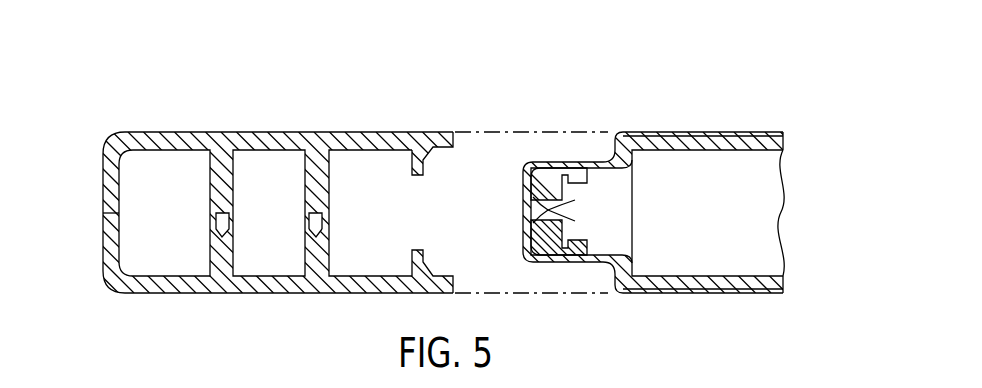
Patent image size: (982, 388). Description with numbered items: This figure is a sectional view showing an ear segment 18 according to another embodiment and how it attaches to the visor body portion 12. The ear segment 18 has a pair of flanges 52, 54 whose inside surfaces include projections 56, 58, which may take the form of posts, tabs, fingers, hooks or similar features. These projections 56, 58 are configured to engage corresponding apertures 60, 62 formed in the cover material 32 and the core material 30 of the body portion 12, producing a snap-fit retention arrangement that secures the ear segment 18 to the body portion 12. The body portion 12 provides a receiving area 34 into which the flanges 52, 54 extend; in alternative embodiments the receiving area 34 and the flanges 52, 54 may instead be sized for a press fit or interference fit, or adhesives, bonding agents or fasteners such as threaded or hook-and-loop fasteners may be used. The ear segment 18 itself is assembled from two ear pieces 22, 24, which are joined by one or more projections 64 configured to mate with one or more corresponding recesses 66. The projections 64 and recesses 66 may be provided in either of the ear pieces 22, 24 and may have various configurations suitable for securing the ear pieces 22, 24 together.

The visor body portion 12 is at (730, 68).
The ear segment 18 is at (190, 112).
The ear piece 22 is at (123, 150).
The ear piece 24 is at (126, 278).
The core material 30 is at (781, 140).
The cover material 32 is at (752, 131).
The receiving area 34 is at (595, 105).
The flange 52 is at (338, 129).
The flange 54 is at (332, 288).
The projection 56 is at (414, 157).
The projection 58 is at (424, 265).
The aperture 60 is at (582, 180).
The aperture 62 is at (582, 243).
The projection 64 is at (318, 218).
The recess 66 is at (317, 231).